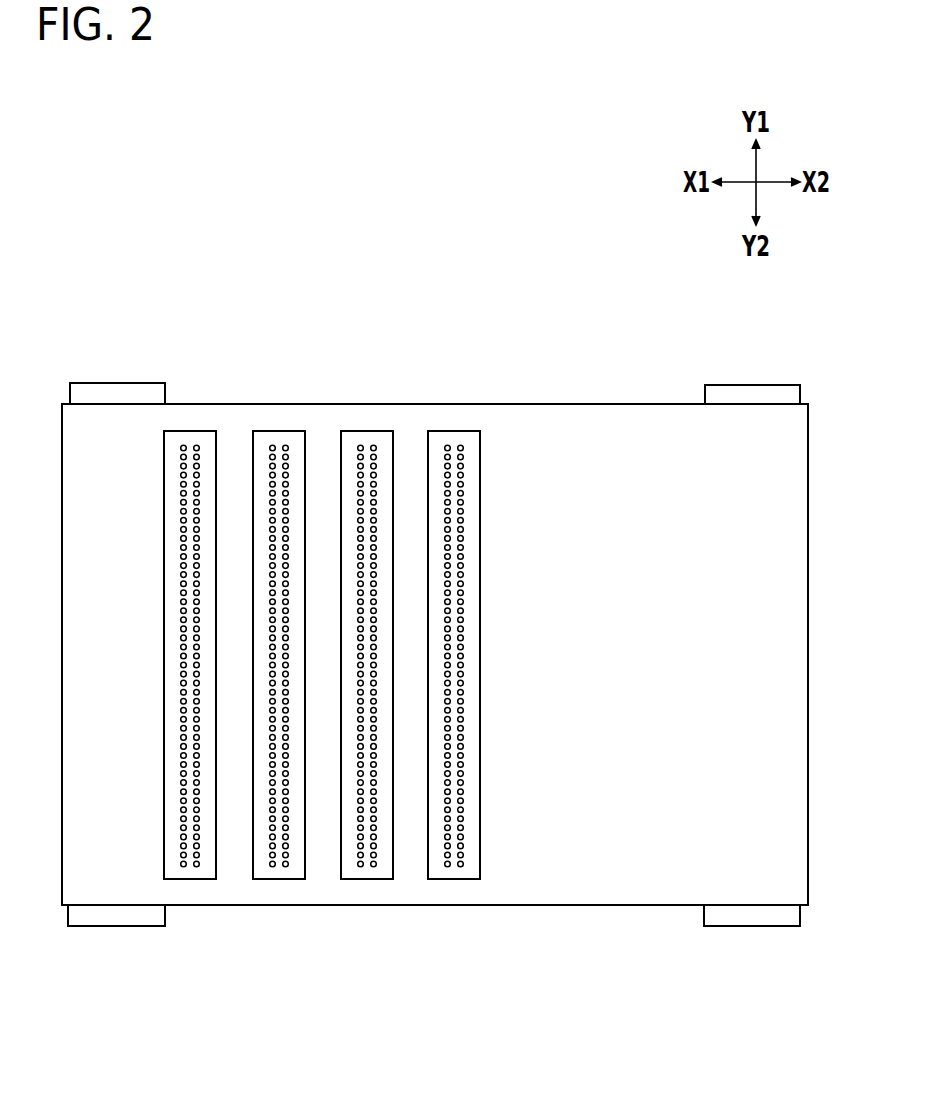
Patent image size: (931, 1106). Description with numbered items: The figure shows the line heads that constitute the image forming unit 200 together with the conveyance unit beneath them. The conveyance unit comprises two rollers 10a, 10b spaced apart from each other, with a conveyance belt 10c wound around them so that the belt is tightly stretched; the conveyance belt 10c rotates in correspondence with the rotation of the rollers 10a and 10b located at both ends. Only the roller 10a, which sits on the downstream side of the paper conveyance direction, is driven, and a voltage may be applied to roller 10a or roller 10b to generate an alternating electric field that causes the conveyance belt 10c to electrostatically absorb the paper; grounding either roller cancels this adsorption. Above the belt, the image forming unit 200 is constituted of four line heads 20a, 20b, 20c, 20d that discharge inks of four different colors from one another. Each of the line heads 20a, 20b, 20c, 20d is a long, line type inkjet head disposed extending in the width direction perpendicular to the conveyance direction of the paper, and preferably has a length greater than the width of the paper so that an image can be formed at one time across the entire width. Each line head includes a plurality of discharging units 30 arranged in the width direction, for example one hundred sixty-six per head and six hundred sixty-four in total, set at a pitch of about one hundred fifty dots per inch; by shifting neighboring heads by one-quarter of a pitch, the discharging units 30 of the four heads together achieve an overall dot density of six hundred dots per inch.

The roller 10a is at (741, 393).
The roller 10b is at (105, 390).
The conveyance belt 10c is at (793, 848).
The image forming unit 200 is at (478, 326).
The line head 20a is at (200, 441).
The line head 20b is at (288, 441).
The line head 20c is at (375, 441).
The line head 20d is at (463, 441).
The discharging unit 30 is at (183, 466).